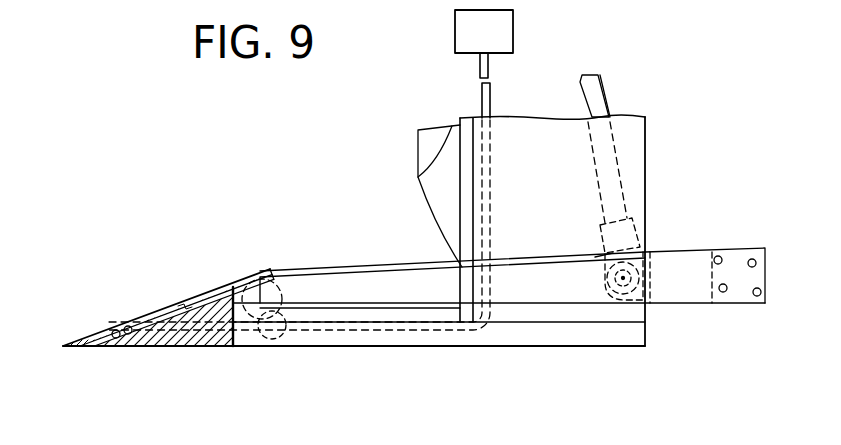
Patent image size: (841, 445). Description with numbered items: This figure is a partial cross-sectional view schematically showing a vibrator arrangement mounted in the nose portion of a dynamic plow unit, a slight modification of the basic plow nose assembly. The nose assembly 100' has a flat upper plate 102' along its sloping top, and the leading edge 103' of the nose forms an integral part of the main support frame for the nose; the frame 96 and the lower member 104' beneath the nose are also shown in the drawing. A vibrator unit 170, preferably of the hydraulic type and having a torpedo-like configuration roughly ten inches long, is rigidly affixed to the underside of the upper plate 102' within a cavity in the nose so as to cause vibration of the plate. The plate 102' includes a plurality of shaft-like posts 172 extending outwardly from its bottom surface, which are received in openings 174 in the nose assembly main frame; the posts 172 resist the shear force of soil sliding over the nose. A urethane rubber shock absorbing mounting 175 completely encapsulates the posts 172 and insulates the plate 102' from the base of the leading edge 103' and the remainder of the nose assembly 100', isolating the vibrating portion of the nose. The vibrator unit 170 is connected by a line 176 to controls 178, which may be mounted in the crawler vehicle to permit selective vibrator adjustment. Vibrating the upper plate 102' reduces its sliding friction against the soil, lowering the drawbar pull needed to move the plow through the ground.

The frame 96 is at (630, 335).
The nose assembly 100' is at (161, 330).
The flat upper plate 102' is at (167, 309).
The leading edge 103' is at (59, 308).
The bottom plate 104' is at (150, 387).
The vibrator unit 170 is at (185, 315).
The shaft-like posts 172 is at (117, 346).
The openings 174 is at (130, 347).
The urethane rubber shock absorbing mounting 175 is at (227, 288).
The line 176 is at (490, 206).
The controls 178 is at (509, 33).